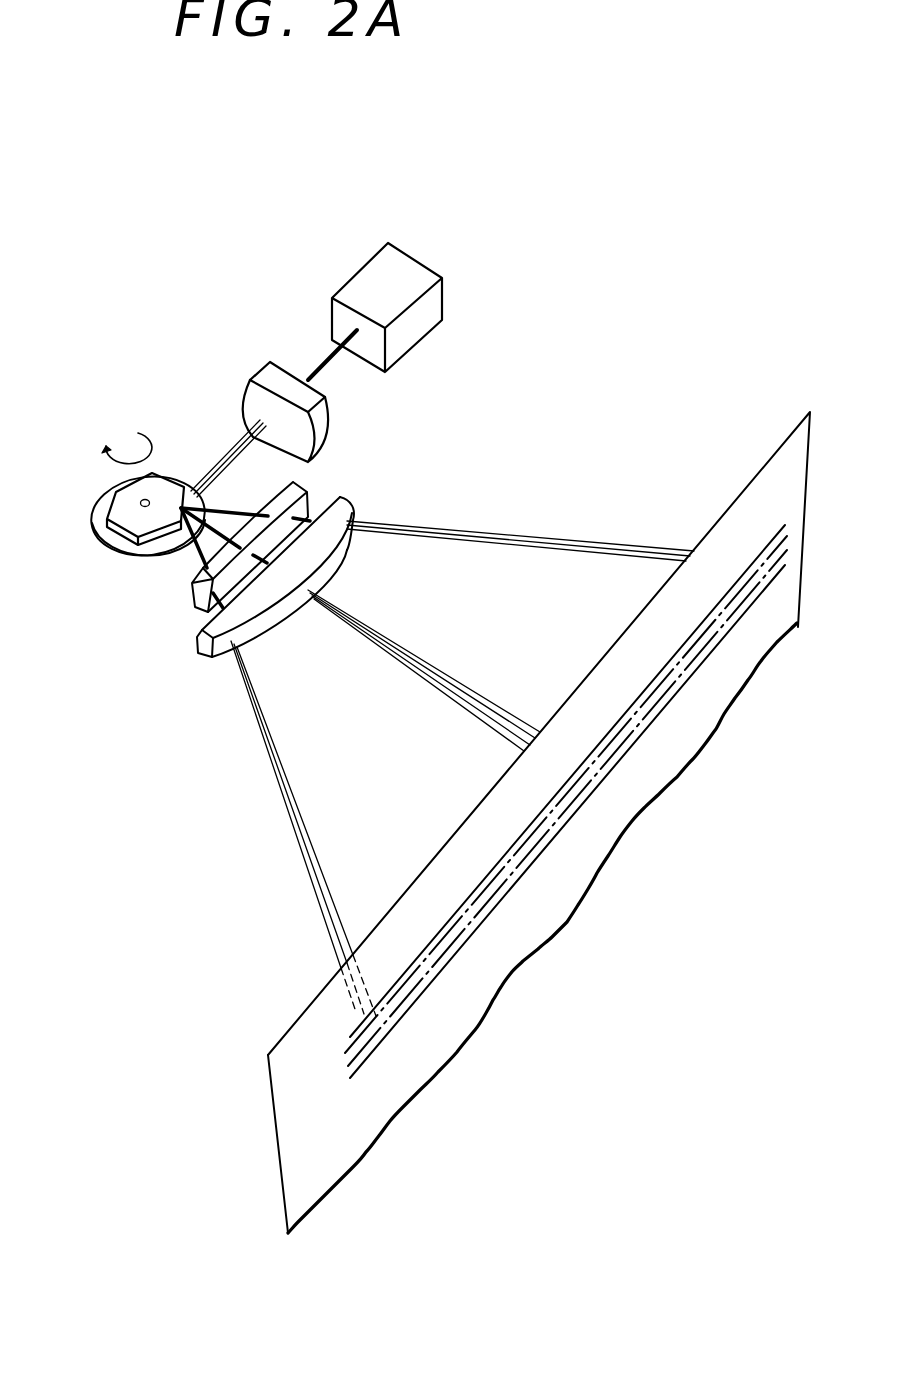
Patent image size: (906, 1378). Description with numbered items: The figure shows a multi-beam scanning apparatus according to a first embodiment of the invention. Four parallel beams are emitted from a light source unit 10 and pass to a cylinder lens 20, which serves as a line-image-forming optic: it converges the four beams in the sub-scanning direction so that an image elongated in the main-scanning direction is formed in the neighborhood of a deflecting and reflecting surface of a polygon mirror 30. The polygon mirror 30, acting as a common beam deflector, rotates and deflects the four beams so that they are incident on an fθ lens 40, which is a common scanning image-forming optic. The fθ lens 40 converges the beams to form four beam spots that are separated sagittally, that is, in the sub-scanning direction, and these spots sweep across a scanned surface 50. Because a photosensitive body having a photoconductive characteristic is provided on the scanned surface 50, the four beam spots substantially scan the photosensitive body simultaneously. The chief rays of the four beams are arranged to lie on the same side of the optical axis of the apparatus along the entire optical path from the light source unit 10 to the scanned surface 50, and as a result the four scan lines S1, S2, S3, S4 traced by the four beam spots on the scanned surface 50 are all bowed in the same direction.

The light source unit 10 is at (412, 270).
The cylinder lens 20 is at (268, 375).
The polygon mirror 30 is at (110, 535).
The fθ lens 40 is at (175, 588).
The scanned surface 50 is at (287, 1122).
The scan line S1 is at (349, 1038).
The scan line S2 is at (346, 1053).
The scan line S3 is at (349, 1068).
The scan line S4 is at (351, 1080).